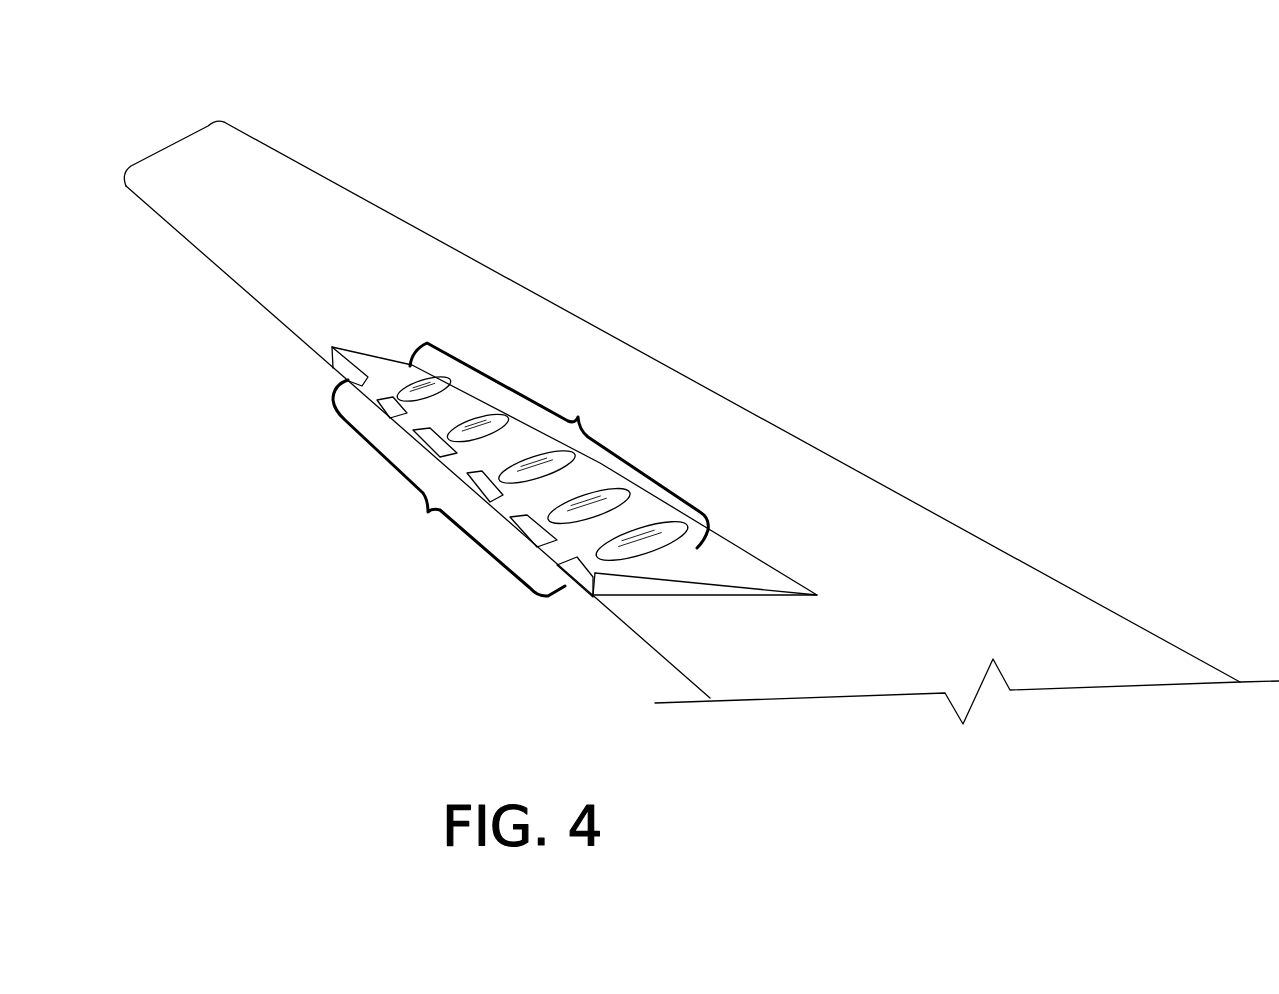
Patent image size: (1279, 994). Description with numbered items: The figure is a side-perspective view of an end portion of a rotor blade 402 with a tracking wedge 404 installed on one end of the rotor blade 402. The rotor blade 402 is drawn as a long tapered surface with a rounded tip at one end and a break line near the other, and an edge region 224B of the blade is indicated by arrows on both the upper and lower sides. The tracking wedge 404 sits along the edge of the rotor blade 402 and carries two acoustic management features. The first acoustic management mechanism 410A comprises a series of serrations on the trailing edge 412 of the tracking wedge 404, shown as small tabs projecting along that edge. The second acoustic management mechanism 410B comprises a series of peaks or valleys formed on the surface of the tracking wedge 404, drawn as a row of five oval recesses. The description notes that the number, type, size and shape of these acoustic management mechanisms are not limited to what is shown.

The rotor blade 402 is at (203, 128).
The wing edge / leading-trailing edge 224B is at (483, 238).
The tracking wedge 404 is at (398, 360).
The trailing edge 412 is at (315, 385).
The first acoustic management mechanism 410A is at (449, 488).
The second acoustic management mechanism 410B is at (559, 445).